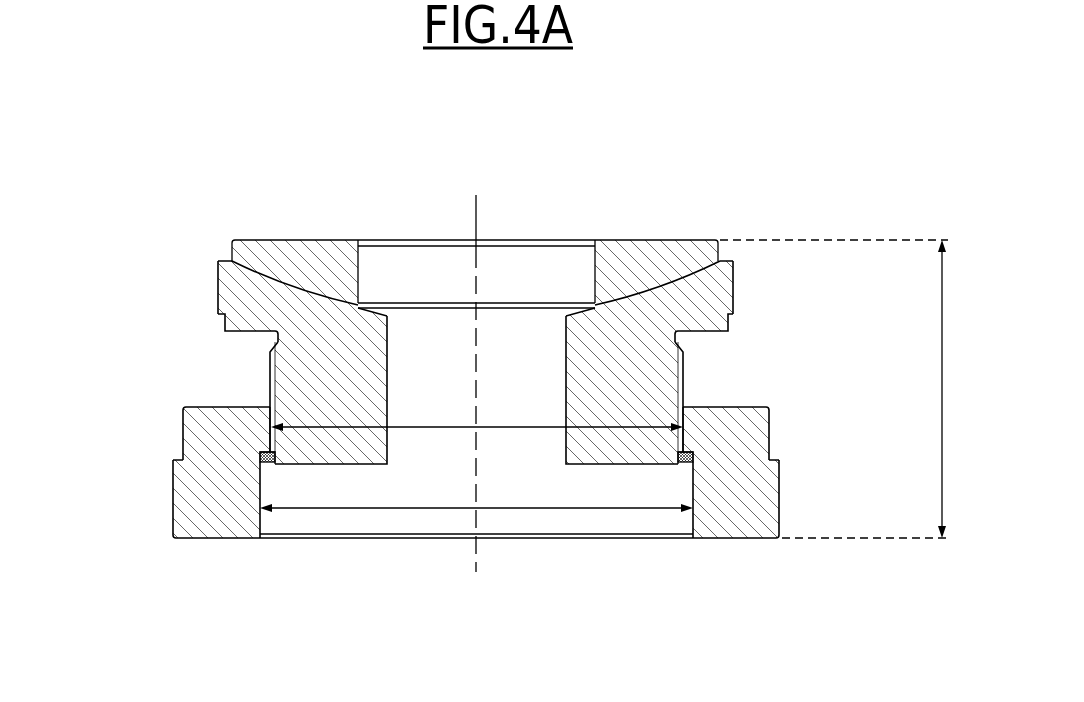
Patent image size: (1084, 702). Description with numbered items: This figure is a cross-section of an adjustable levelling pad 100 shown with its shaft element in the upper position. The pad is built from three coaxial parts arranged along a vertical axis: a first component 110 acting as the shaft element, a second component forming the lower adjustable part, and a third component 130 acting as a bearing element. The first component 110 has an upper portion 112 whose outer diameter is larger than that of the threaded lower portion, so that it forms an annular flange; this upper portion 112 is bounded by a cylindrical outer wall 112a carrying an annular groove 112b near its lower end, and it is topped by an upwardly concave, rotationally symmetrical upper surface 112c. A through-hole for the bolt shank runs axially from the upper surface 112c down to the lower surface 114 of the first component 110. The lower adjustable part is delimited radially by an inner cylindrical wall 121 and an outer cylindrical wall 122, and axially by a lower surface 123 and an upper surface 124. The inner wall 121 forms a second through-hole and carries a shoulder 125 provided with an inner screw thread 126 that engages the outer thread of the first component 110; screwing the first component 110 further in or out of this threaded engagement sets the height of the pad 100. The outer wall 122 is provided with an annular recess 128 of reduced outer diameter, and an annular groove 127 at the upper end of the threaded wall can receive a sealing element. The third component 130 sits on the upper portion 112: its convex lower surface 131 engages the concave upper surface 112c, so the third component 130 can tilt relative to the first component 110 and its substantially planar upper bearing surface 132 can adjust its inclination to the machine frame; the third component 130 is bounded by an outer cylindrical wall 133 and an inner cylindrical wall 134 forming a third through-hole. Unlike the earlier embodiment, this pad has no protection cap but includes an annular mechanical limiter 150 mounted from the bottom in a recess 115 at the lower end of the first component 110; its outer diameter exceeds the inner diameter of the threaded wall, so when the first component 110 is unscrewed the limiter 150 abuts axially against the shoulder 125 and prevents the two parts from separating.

The adjustable levelling pad 100 is at (783, 153).
The first component 110 is at (206, 308).
The upper portion 112 is at (225, 277).
The cylindrical outer wall 112a is at (733, 288).
The annular groove 112b is at (732, 317).
The upper surface 112c is at (716, 253).
The lower surface 114 is at (328, 467).
The recess 115 is at (266, 466).
The inner cylindrical wall 121 is at (693, 538).
The outer cylindrical wall 122 is at (780, 515).
The lower surface 123 is at (740, 540).
The upper surface 124 is at (712, 392).
The shoulder 125 is at (695, 455).
The inner screw thread 126 is at (777, 482).
The annular groove 127 is at (272, 405).
The annular recess 128 is at (772, 448).
The third component 130 is at (211, 249).
The lower surface 131 is at (333, 312).
The upper bearing surface 132 is at (278, 240).
The outer cylindrical wall 133 is at (230, 243).
The inner cylindrical wall 134 is at (593, 270).
The mechanical limiter 150 is at (262, 456).